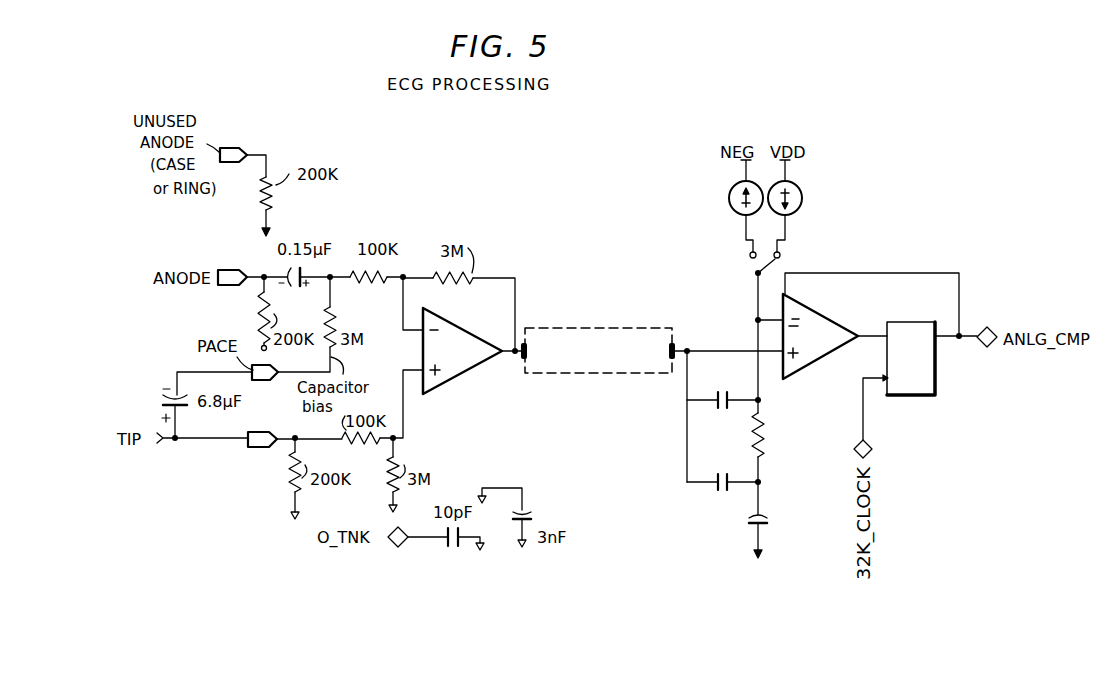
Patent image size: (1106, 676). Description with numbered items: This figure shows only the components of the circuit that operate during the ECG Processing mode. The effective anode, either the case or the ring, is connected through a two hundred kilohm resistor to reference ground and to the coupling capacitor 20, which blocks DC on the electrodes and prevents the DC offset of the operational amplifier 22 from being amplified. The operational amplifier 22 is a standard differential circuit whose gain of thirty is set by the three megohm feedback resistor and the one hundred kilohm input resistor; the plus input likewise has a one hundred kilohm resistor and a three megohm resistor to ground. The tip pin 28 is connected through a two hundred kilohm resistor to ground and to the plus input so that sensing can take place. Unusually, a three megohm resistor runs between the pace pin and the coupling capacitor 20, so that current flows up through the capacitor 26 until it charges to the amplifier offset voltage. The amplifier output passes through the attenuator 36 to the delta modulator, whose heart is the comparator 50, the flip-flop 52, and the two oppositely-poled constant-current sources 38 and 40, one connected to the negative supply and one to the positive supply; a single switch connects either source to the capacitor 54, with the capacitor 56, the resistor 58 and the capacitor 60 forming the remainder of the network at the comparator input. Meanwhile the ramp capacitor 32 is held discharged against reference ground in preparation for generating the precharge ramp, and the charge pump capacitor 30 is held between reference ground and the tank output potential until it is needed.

The coupling capacitor 20 is at (298, 287).
The operational amplifier 22 is at (450, 323).
The capacitor 26 is at (165, 397).
The tip pin 28 is at (258, 432).
The capacitor 30 is at (453, 545).
The ramp capacitor 32 is at (534, 510).
The attenuator 36 is at (587, 328).
The constant-current source 38 is at (729, 191).
The constant-current source 40 is at (804, 193).
The comparator 50 is at (818, 313).
The flip-flop 52 is at (915, 322).
The capacitor 54 is at (720, 408).
The capacitor 56 is at (720, 488).
The resistor 58 is at (764, 425).
The capacitor 60 is at (750, 518).